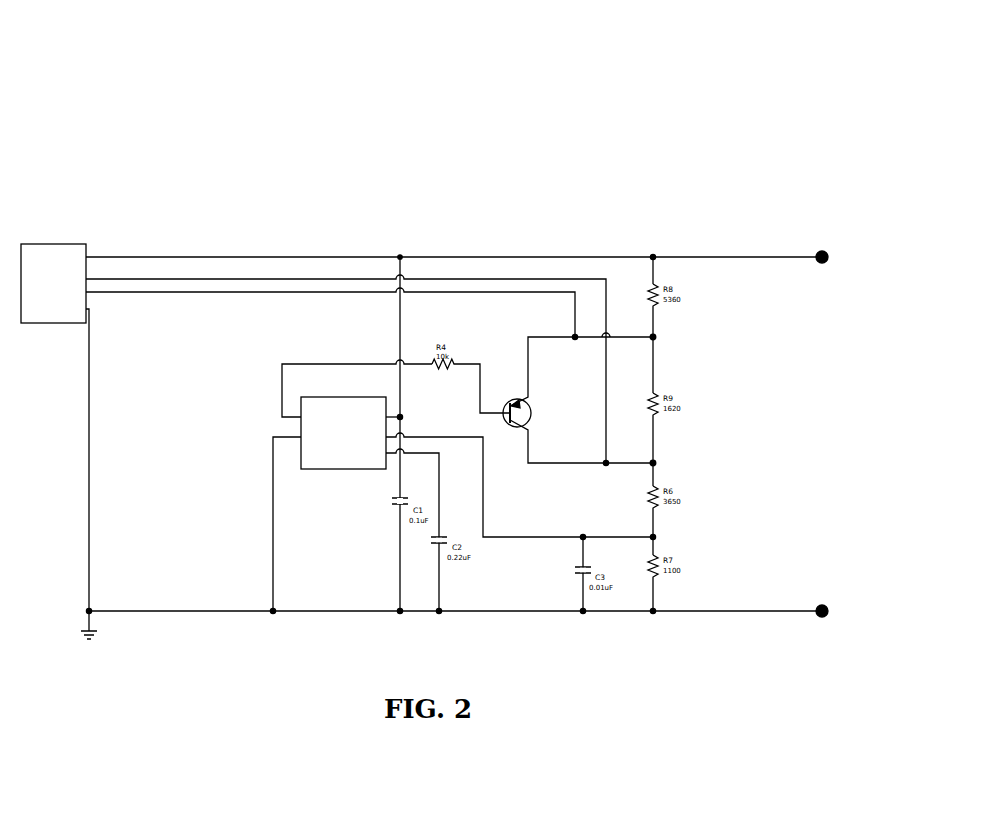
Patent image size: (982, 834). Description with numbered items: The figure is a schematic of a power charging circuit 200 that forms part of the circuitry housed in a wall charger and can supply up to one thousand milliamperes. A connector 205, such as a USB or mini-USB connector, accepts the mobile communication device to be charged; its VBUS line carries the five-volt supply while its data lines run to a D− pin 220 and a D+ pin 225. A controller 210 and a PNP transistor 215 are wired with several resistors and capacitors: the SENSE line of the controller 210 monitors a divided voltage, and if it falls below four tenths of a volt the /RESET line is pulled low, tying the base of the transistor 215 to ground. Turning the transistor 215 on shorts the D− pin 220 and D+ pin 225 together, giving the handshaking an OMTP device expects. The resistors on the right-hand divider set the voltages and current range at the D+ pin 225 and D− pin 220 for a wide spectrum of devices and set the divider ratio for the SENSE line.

The circuit 200 is at (625, 126).
The connector 205 is at (98, 233).
The controller 210 is at (332, 385).
The transistor 215 is at (511, 385).
The D− pin 220 is at (684, 334).
The D+ pin 225 is at (684, 462).